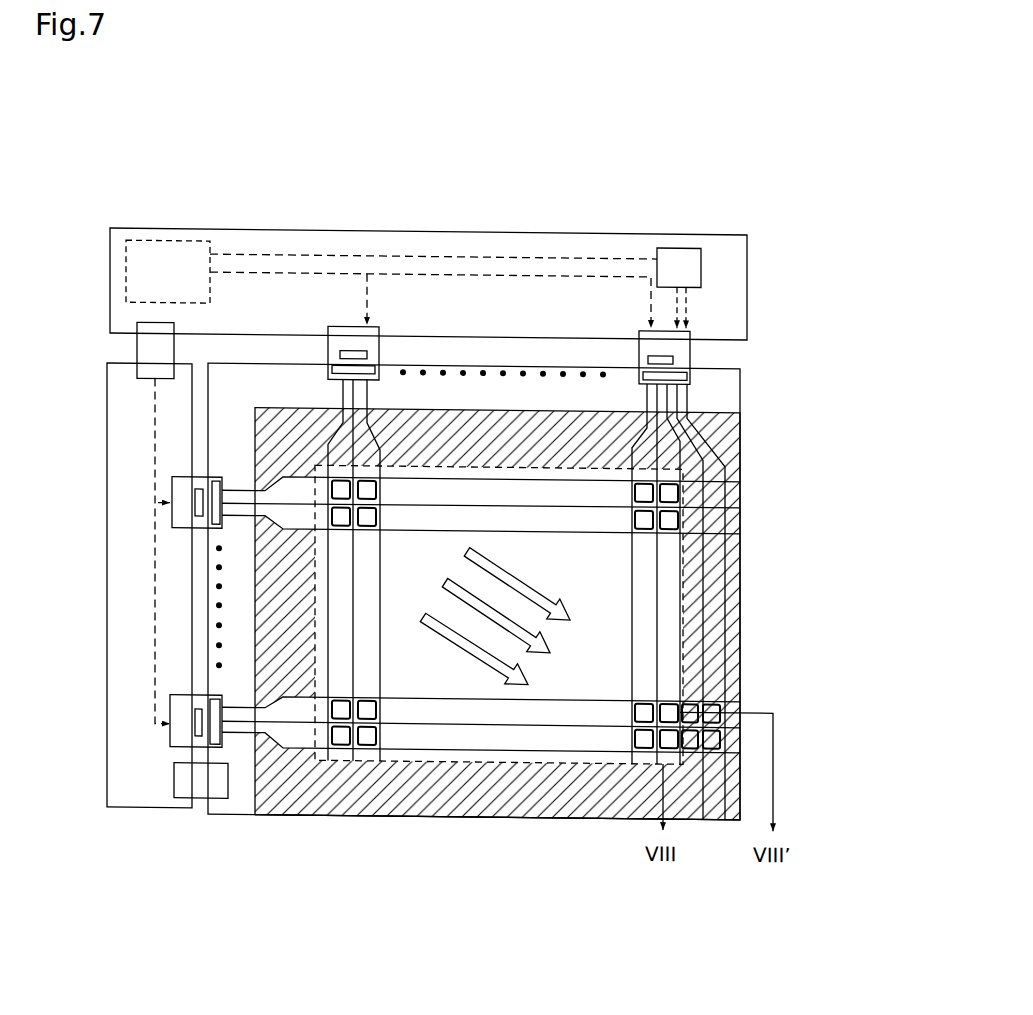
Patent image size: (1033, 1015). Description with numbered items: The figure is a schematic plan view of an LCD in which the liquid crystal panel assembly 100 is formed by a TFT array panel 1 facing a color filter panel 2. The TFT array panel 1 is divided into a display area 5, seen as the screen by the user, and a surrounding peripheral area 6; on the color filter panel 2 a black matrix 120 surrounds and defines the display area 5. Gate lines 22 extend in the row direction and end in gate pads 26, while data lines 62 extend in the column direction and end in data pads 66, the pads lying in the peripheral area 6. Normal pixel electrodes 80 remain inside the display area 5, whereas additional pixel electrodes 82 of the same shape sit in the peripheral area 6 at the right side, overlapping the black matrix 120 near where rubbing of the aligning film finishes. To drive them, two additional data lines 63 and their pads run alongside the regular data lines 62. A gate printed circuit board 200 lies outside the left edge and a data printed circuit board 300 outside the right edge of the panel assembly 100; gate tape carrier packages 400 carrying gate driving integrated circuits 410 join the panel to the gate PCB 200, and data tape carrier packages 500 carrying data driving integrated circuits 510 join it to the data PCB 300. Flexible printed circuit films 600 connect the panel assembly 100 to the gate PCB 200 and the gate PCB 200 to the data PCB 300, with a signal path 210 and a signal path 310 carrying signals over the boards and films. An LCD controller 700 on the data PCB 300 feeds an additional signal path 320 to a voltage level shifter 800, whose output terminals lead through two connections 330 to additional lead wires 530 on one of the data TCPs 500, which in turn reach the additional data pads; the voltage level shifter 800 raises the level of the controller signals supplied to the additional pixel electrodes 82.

The TFT array panel 1 is at (497, 565).
The color filter panel 2 is at (515, 592).
The display area 5 is at (677, 886).
The peripheral area 6 is at (312, 874).
The gate lines 22 is at (481, 614).
The gate pads 26 is at (140, 548).
The data lines 62 is at (504, 571).
The additional data lines 63 is at (741, 602).
The data pads 66 is at (369, 278).
The pixel electrodes 80 is at (347, 789).
The additional pixel electrodes 82 is at (713, 786).
The liquid crystal panel assembly 100 is at (497, 645).
The black matrix 120 is at (497, 846).
The gate printed circuit board 200 is at (113, 585).
The signal path 210 is at (101, 550).
The data printed circuit board 300 is at (428, 258).
The signal path 310 is at (430, 258).
The additional signal path 320 is at (433, 224).
The connections 330 is at (710, 296).
The gate tape carrier packages 400 is at (141, 611).
The gate driving integrated circuits 410 is at (119, 529).
The data tape carrier packages 500 is at (337, 281).
The data driving integrated circuits 510 is at (359, 278).
The additional lead wires 530 is at (714, 335).
The flexible printed circuit films 600 is at (147, 599).
The LCD controller 700 is at (178, 243).
The voltage level shifter 800 is at (692, 243).